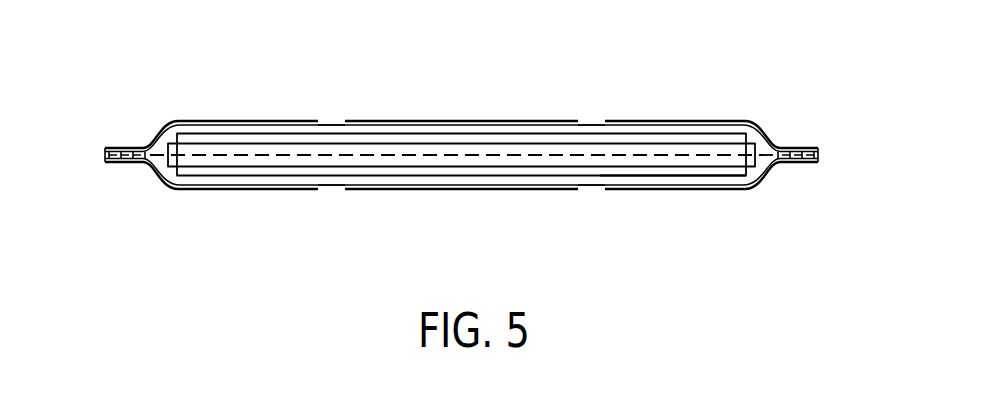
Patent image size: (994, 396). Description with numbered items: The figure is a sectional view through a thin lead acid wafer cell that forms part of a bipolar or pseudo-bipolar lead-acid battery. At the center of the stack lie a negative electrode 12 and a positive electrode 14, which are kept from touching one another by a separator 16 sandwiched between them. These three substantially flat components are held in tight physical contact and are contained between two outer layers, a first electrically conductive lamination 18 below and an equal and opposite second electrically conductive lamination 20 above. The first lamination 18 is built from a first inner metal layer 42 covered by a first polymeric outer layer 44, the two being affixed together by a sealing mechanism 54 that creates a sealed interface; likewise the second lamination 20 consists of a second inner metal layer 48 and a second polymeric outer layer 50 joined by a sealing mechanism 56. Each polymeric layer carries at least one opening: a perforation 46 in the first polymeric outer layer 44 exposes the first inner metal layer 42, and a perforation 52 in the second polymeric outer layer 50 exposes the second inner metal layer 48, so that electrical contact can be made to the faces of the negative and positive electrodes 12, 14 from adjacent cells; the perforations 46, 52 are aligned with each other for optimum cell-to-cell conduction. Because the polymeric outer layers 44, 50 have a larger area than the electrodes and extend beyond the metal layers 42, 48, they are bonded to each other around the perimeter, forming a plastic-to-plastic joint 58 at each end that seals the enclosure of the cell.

The negative electrode 12 is at (535, 142).
The positive electrode 14 is at (363, 176).
The separator 16 is at (769, 145).
The first electrically conductive lamination 18 is at (223, 189).
The second electrically conductive lamination 20 is at (222, 121).
The first inner metal layer 42 is at (641, 176).
The first polymeric outer layer 44 is at (707, 190).
The perforation 46 is at (325, 199).
The second inner metal layer 48 is at (352, 121).
The second polymeric outer layer 50 is at (417, 121).
The perforation 52 is at (325, 112).
The sealing mechanism 54 is at (466, 190).
The sealing mechanism 56 is at (500, 121).
The plastic-to-plastic joint 58 is at (119, 150).